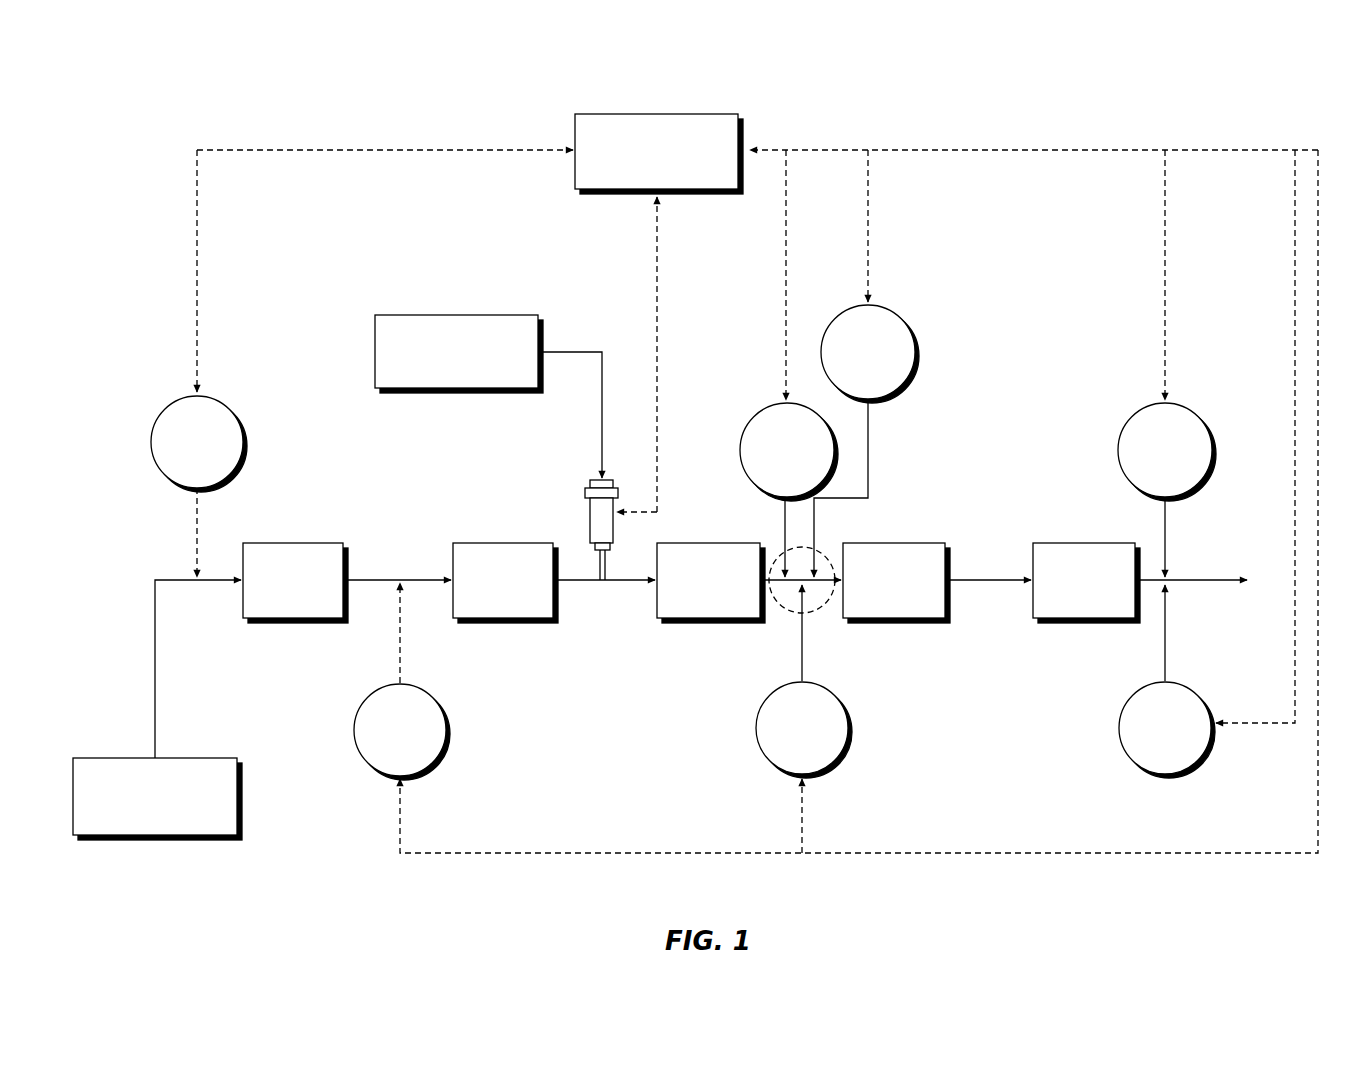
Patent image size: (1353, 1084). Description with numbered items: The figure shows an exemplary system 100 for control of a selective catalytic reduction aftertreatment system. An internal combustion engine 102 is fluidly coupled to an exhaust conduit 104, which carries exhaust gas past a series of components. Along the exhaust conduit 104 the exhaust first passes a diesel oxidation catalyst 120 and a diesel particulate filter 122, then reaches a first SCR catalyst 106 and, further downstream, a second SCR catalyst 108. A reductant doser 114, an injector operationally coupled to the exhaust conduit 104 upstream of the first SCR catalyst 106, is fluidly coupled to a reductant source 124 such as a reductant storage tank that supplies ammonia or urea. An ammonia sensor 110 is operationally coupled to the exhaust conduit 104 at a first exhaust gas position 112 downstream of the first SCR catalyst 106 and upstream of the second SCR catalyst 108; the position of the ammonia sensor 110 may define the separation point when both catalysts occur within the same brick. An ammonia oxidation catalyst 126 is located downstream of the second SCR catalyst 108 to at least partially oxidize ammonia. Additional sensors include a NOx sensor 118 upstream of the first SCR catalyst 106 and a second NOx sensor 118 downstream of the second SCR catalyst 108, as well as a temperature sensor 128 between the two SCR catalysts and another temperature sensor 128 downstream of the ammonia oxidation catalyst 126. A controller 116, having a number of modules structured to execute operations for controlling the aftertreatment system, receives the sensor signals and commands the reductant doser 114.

The system 100 is at (264, 84).
The internal combustion engine 102 is at (134, 757).
The exhaust conduit 104 is at (212, 594).
The first SCR catalyst 106 is at (656, 600).
The second SCR catalyst 108 is at (925, 542).
The ammonia sensor 110 is at (764, 407).
The first exhaust gas position 112 is at (812, 612).
The reductant doser 114 is at (589, 513).
The controller 116 is at (574, 172).
The NOx sensor 118 is at (151, 441).
The diesel oxidation catalyst 120 is at (296, 542).
The diesel particulate filter 122 is at (506, 542).
The reductant source 124 is at (374, 353).
The ammonia oxidation catalyst 126 is at (1085, 542).
The temperature sensor 128 is at (754, 729).